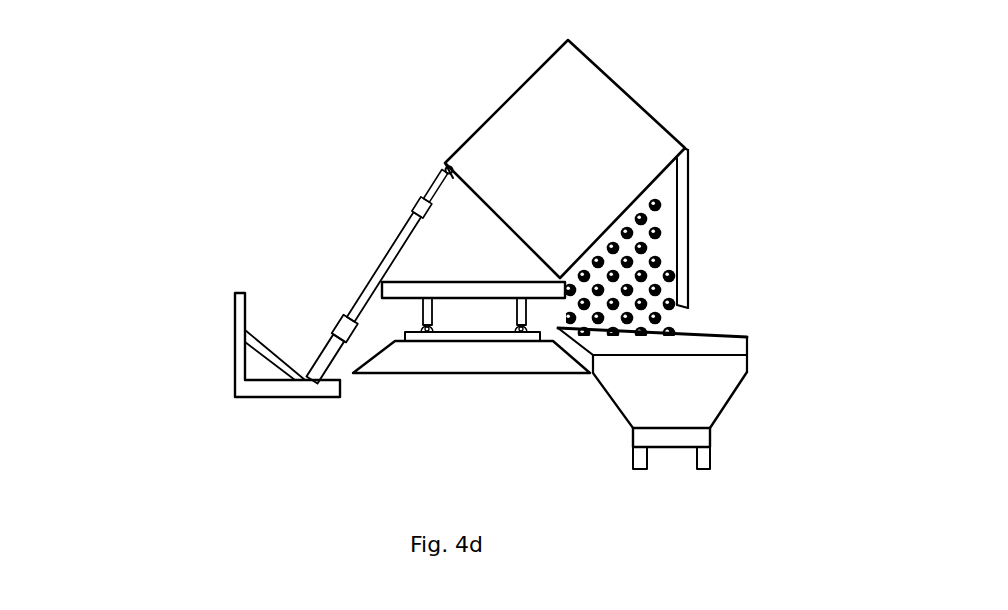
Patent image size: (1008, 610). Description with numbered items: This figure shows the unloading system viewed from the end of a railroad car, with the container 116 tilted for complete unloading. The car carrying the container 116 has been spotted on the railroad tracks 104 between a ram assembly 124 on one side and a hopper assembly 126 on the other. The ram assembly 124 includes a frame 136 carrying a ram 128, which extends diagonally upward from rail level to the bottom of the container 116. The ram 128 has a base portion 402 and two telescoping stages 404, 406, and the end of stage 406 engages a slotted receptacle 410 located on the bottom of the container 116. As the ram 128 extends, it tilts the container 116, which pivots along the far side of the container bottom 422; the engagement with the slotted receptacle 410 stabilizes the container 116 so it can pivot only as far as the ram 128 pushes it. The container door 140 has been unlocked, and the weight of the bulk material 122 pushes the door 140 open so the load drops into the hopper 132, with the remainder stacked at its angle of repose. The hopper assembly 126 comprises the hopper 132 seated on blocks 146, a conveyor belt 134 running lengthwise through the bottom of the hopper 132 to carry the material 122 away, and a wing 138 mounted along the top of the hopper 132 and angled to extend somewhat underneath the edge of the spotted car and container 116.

The container 116 is at (518, 120).
The container door 140 is at (690, 198).
The bulk material 122 is at (642, 307).
The slotted receptacle 410 is at (443, 173).
The telescoping stage 406 is at (427, 202).
The container bottom 422 is at (417, 220).
The telescoping stage 404 is at (393, 248).
The base portion 402 is at (328, 340).
The ram 128 is at (332, 363).
The frame 136 is at (237, 367).
The ram assembly 124 is at (205, 332).
The railroad tracks 104 is at (428, 330).
The wing 138 is at (710, 348).
The hopper 132 is at (712, 405).
The conveyor belt 134 is at (703, 438).
The blocks 146 is at (700, 465).
The hopper assembly 126 is at (770, 397).